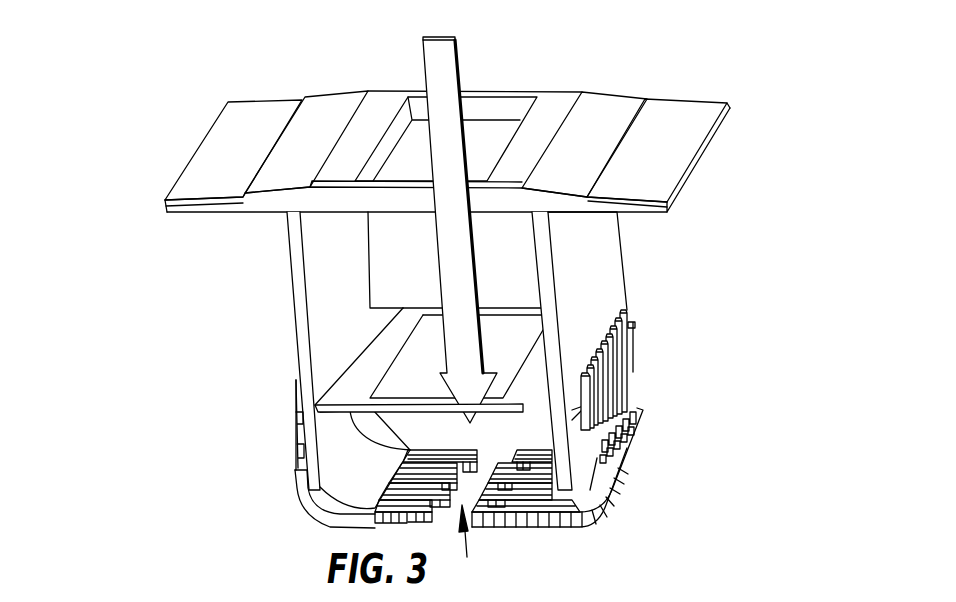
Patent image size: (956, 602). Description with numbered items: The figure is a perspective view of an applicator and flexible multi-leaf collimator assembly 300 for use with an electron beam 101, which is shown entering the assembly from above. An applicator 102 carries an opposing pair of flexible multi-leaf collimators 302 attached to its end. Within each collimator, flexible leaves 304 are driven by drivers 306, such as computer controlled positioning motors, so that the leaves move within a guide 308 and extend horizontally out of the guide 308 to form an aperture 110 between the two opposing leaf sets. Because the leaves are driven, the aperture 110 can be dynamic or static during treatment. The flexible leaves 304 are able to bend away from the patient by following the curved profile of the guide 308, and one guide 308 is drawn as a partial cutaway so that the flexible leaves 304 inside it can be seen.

The applicator and flexible multi-leaf collimator assembly 300 is at (135, 130).
The electron beam 101 is at (460, 63).
The applicator 102 is at (607, 92).
The flexible multi-leaf collimator 302 is at (273, 495).
The flexible leaf 304 is at (433, 437).
The driver 306 is at (628, 310).
The guide 308 is at (307, 512).
The aperture 110 is at (484, 537).